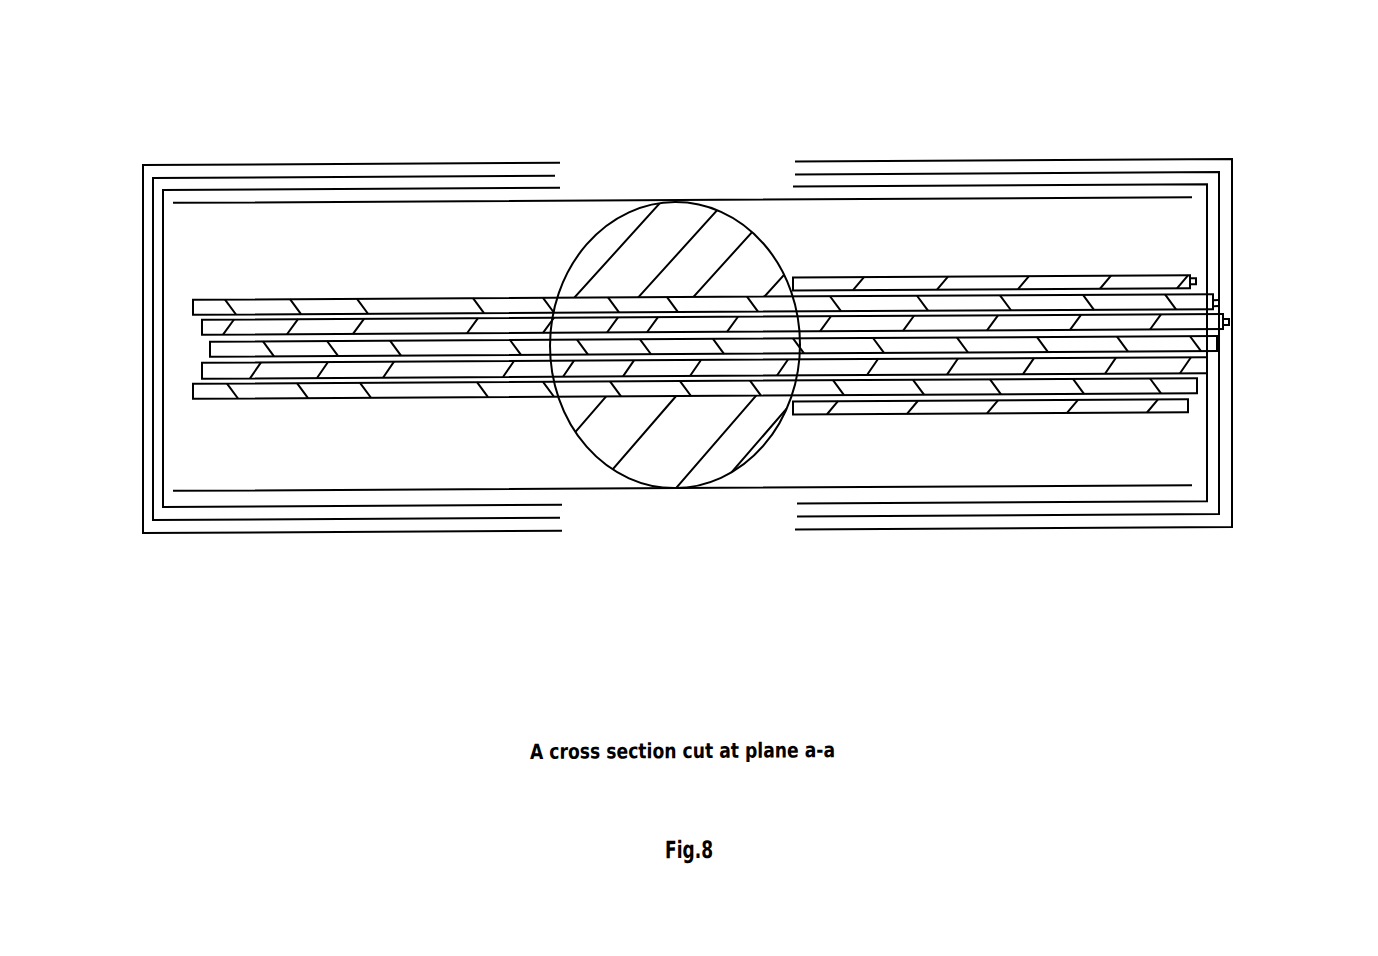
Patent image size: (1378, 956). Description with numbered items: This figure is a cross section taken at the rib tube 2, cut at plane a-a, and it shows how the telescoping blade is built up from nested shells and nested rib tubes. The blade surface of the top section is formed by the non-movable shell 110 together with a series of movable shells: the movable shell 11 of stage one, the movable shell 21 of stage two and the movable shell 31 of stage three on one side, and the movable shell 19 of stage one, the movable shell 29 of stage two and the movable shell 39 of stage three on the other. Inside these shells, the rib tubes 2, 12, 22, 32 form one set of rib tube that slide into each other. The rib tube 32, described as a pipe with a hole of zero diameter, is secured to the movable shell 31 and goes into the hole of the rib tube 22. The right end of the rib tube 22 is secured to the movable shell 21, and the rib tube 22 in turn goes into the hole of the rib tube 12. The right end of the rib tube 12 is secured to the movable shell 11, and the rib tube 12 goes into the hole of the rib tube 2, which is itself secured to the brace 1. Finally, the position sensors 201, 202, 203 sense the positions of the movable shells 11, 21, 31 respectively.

The brace 1 is at (683, 226).
The rib tube 2 is at (1137, 288).
The movable shell of stage one 11 is at (917, 187).
The rib tube 12 is at (942, 391).
The movable shell of stage one 19 is at (552, 188).
The movable shell of stage two 21 is at (1073, 177).
The rib tube 22 is at (1170, 411).
The movable shell of stage two 29 is at (440, 177).
The movable shell of stage three 31 is at (1192, 163).
The rib tube 32 is at (1217, 349).
The movable shell of stage three 39 is at (328, 164).
The non-movable shell 110 is at (740, 203).
The position sensor 201 is at (1195, 288).
The position sensor 202 is at (1213, 308).
The position sensor 203 is at (1227, 329).